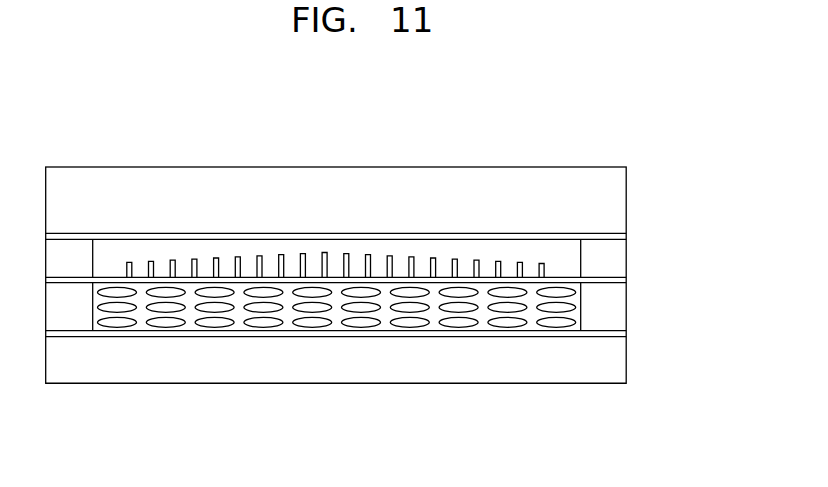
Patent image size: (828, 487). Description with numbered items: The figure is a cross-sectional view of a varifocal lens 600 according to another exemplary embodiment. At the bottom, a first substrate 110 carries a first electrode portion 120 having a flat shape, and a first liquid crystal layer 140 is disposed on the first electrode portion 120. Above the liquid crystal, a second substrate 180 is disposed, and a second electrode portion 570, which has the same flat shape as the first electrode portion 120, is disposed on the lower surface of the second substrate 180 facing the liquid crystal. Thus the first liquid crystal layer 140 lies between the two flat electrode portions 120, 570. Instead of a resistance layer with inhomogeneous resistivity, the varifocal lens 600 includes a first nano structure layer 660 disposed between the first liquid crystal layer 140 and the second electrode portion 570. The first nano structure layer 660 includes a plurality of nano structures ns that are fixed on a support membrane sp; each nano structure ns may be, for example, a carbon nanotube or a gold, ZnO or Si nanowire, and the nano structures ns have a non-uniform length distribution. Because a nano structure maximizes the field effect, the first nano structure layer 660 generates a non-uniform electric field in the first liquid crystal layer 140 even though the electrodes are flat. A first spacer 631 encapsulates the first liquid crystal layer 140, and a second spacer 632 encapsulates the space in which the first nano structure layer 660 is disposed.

The varifocal lens 600 is at (642, 153).
The second substrate 180 is at (627, 202).
The second electrode portion 570 is at (627, 238).
The second spacer 632 is at (627, 260).
The first nano structure layer 660 is at (335, 182).
The nano structures ns is at (479, 260).
The support membrane sp is at (532, 278).
The first spacer 631 is at (627, 307).
The first liquid crystal layer 140 is at (532, 327).
The first electrode portion 120 is at (627, 334).
The first substrate 110 is at (627, 362).